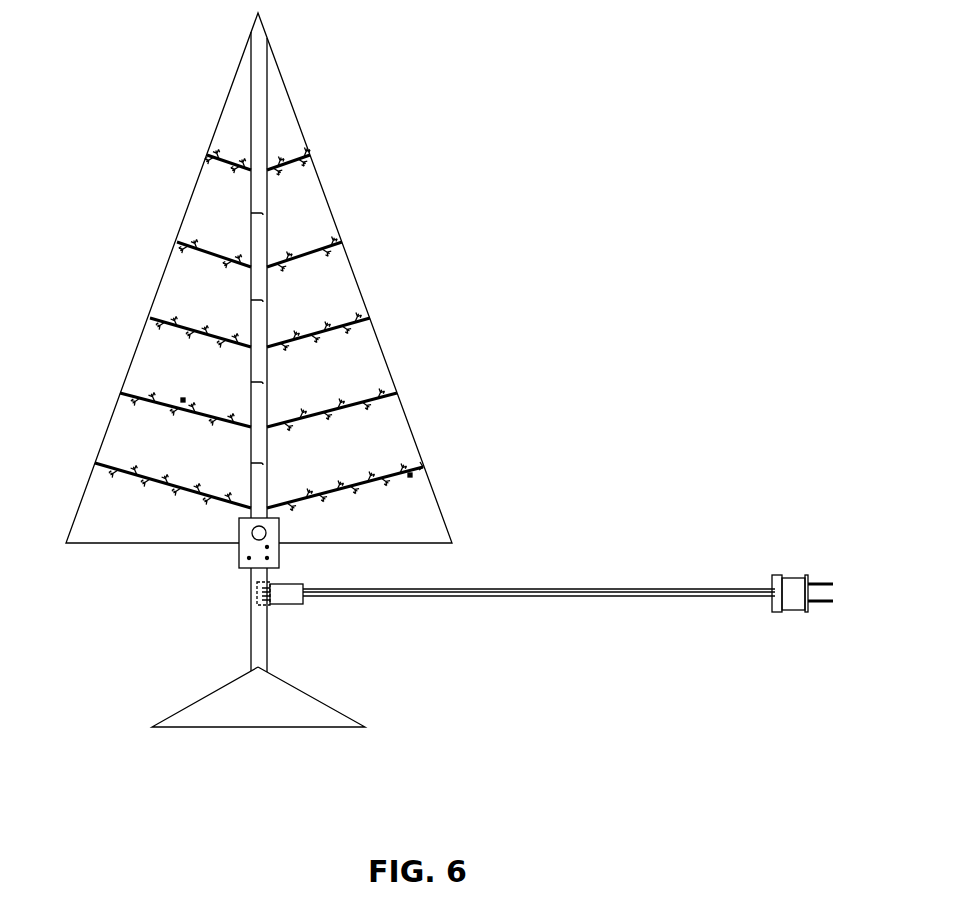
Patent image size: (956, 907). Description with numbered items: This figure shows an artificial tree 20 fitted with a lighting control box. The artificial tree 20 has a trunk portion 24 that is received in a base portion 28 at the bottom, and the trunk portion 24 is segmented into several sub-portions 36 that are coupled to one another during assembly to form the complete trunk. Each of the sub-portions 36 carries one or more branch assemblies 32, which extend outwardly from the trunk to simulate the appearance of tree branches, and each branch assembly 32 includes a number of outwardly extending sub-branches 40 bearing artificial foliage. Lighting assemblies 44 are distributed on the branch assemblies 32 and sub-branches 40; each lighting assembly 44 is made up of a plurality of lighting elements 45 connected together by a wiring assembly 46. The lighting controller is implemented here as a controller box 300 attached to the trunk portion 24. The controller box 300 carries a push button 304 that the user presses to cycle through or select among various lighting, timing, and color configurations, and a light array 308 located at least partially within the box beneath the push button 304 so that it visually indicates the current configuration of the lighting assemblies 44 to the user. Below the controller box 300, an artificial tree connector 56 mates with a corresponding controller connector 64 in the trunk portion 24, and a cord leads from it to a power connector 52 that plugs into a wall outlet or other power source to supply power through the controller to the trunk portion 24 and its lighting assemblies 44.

The artificial tree 20 is at (298, 118).
The trunk portion 24 is at (260, 77).
The base portion 28 is at (222, 683).
The branch assemblies 32 is at (127, 393).
The sub-portions 36 is at (253, 127).
The sub-branches 40 is at (183, 400).
The lighting assemblies 44 is at (305, 163).
The lighting elements 45 is at (427, 477).
The wiring assembly 46 is at (412, 474).
The power connector 52 is at (792, 582).
The artificial tree connector 56 is at (288, 602).
The controller connector 64 is at (268, 578).
The controller box 300 is at (245, 568).
The push button 304 is at (240, 535).
The light array 308 is at (250, 547).